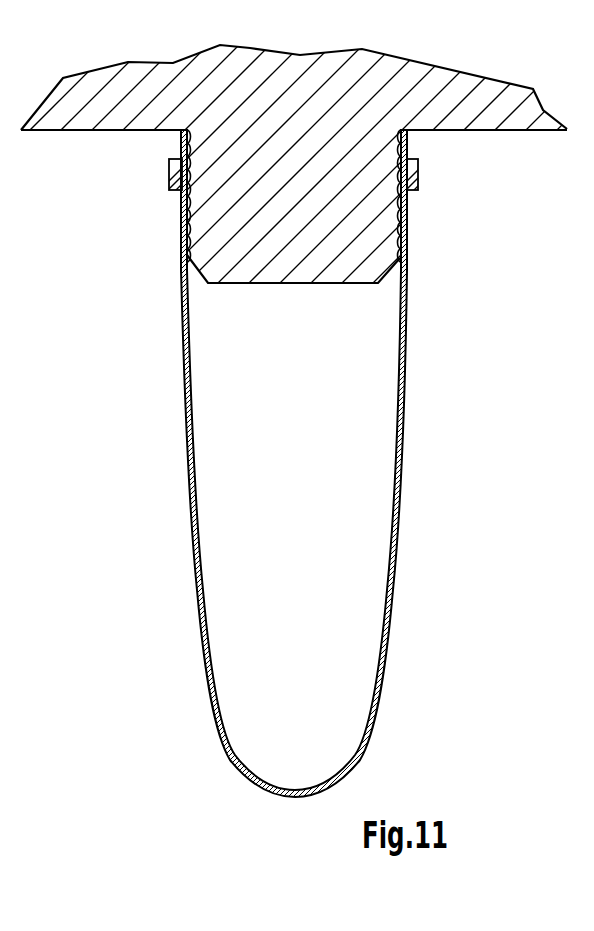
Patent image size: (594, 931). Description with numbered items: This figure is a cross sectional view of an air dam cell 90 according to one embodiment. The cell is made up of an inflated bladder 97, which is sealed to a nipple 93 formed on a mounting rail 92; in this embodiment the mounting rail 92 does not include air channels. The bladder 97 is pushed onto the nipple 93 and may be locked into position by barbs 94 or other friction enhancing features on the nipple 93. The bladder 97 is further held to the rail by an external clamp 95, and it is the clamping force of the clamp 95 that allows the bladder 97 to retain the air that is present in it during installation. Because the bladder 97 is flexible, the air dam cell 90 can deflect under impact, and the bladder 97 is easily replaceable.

The air dam cell 90 is at (297, 465).
The mounting rail 92 is at (490, 92).
The nipple 93 is at (362, 247).
The barbs 94 is at (181, 242).
The clamp 95 is at (418, 172).
The inflated bladder 97 is at (388, 619).